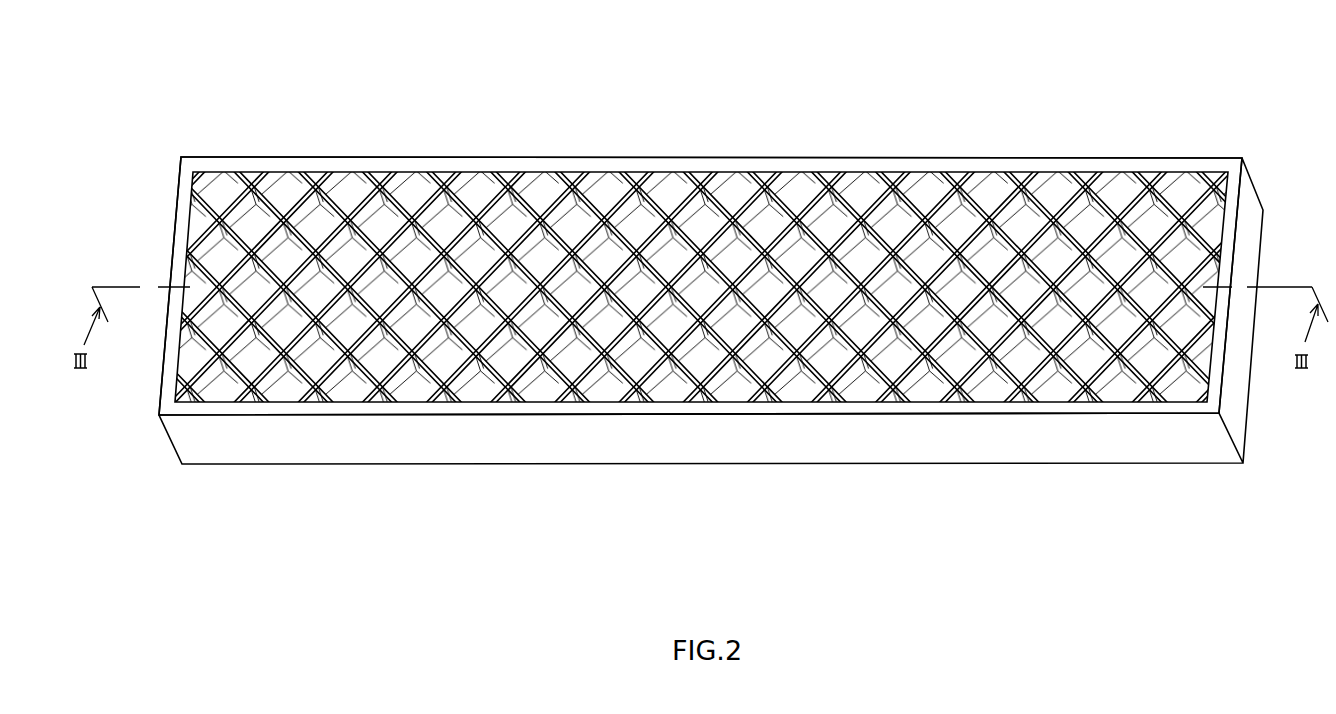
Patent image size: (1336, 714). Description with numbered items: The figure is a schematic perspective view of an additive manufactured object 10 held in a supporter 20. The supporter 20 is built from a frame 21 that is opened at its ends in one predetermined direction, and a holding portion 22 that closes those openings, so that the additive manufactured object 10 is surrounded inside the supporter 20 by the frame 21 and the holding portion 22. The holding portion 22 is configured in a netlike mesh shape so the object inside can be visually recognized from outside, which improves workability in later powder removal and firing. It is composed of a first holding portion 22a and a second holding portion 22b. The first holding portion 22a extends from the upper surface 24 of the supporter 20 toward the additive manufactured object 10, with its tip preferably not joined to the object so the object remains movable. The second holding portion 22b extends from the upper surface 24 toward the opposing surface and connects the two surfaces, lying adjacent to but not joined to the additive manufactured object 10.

The additive manufactured object 10 is at (838, 221).
The supporter 20 is at (979, 144).
The frame 21 is at (303, 159).
The holding portion 22 is at (703, 218).
The first holding portion 22a is at (1105, 213).
The second holding portion 22b is at (1187, 203).
The upper surface 24 is at (443, 173).